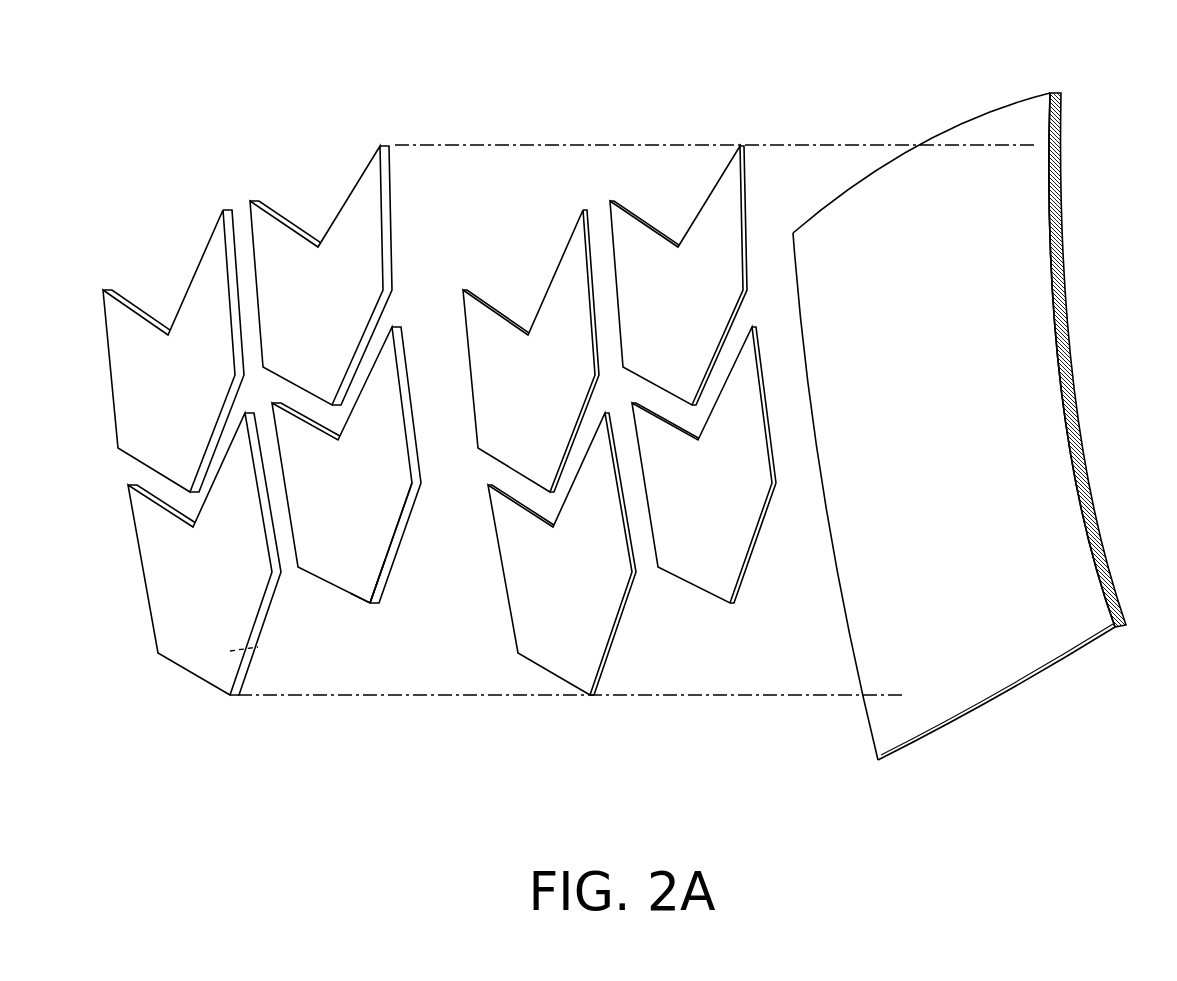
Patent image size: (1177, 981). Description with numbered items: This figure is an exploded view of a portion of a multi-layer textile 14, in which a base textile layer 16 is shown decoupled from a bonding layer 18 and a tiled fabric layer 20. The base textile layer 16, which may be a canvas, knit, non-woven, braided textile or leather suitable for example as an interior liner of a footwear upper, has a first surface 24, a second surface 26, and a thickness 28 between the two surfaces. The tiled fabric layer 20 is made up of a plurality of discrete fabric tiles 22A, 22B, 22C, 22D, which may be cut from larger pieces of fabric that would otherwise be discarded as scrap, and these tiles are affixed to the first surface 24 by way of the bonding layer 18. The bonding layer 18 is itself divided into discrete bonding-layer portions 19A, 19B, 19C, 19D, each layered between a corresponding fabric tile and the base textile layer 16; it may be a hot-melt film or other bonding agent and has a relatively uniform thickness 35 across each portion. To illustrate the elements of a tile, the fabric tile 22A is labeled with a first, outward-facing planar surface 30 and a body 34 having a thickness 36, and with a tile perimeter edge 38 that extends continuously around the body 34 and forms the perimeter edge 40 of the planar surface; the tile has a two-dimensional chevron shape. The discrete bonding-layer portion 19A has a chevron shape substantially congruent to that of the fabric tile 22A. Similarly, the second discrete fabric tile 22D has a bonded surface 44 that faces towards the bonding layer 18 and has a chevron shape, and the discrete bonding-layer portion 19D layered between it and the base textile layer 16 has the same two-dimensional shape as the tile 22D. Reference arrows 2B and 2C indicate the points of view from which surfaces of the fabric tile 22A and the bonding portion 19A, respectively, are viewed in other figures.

The multi-layer textile 14 is at (135, 779).
The base textile layer 16 is at (1085, 87).
The bonding layer 18 is at (752, 87).
The tiled fabric layer 20 is at (405, 87).
The fabric tile 22A is at (338, 568).
The fabric tile 22B is at (350, 238).
The fabric tile 22C is at (195, 322).
The second discrete fabric tile 22D is at (200, 643).
The discrete bonding-layer portion 19A is at (700, 568).
The discrete bonding-layer portion 19B is at (713, 238).
The discrete bonding-layer portion 19C is at (555, 320).
The discrete bonding-layer portion 19D is at (532, 617).
The first surface 24 is at (925, 425).
The second surface 26 is at (1033, 292).
The thickness 28 is at (1066, 534).
The first planar surface 30 is at (335, 511).
The body 34 is at (377, 607).
The thickness 35 is at (718, 578).
The thickness 36 is at (358, 578).
The tile perimeter edge 38 is at (405, 530).
The perimeter edge 40 is at (408, 438).
The bonded surface 44 is at (258, 647).
The reference arrow 2B is at (423, 400).
The reference arrow 2C is at (778, 404).